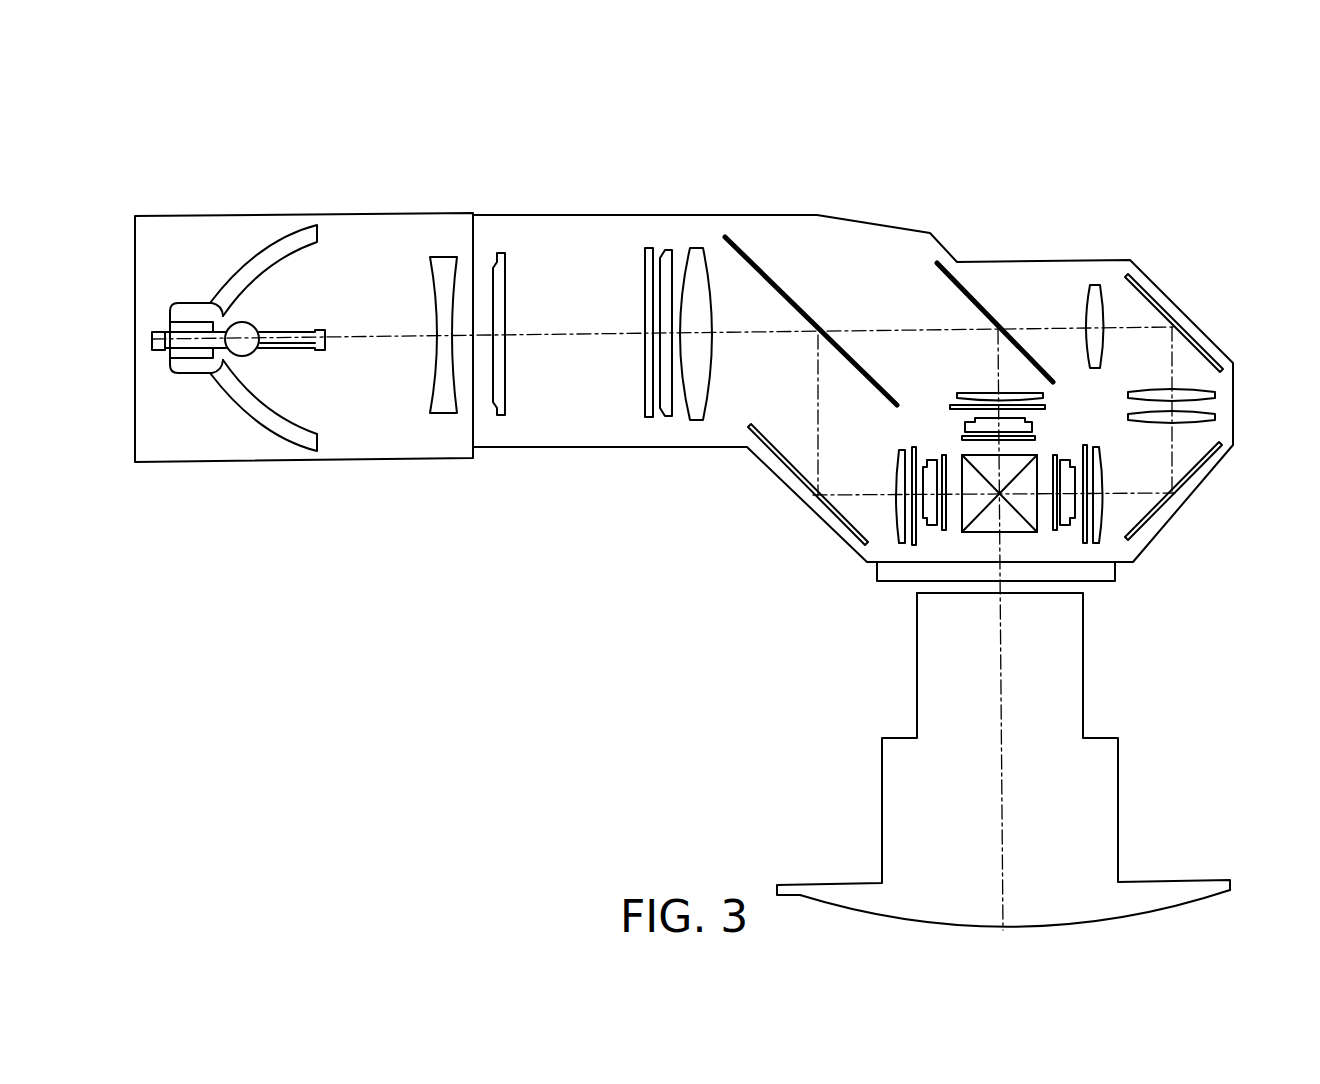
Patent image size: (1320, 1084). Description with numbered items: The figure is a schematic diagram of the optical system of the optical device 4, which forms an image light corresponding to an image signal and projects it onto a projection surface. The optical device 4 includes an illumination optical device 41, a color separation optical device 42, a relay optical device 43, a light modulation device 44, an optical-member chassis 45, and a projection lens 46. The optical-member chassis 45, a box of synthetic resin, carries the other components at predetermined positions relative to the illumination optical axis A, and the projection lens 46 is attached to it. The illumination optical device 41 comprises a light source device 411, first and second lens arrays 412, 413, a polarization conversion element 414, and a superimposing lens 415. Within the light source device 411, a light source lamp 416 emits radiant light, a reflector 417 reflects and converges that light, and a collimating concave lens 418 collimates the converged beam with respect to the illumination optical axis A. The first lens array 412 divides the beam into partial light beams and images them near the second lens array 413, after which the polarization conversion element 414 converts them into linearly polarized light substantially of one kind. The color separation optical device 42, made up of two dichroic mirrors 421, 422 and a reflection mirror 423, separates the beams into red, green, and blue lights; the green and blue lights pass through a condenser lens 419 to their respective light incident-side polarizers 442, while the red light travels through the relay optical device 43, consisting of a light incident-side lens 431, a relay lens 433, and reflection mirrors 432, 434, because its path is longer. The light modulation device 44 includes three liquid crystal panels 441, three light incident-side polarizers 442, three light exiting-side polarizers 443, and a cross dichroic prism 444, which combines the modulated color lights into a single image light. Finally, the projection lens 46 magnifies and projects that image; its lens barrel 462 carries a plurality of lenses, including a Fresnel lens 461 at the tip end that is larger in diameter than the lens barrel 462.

The optical device 4 is at (655, 488).
The illumination optical device 41 is at (655, 175).
The light source device 411 is at (413, 95).
The first lens array 412 is at (507, 295).
The second lens array 413 is at (646, 250).
The polarization conversion element 414 is at (672, 250).
The superimposing lens 415 is at (703, 277).
The light source lamp 416 is at (290, 328).
The reflector 417 is at (291, 238).
The collimating concave lens 418 is at (440, 256).
The condenser lens 419 is at (982, 392).
The color separation optical device 42 is at (880, 244).
The dichroic mirror 421 is at (768, 265).
The dichroic mirror 422 is at (980, 300).
The reflection mirror 423 is at (777, 452).
The relay optical device 43 is at (1190, 284).
The light incident-side lens 431 is at (1095, 285).
The reflection mirror 432 is at (1197, 345).
The relay lens 433 is at (1213, 414).
The reflection mirror 434 is at (1205, 468).
The light modulation device 44 is at (1102, 410).
The liquid crystal panel 441 is at (965, 425).
The light incident-side polarizer 442 is at (950, 406).
The light exiting-side polarizer 443 is at (962, 438).
The cross dichroic prism 444 is at (1012, 528).
The optical-member chassis 45 is at (1013, 262).
The projection lens 46 is at (1003, 752).
The Fresnel lens 461 is at (1142, 900).
The lens barrel 462 is at (1120, 820).
The illumination optical axis A is at (562, 342).